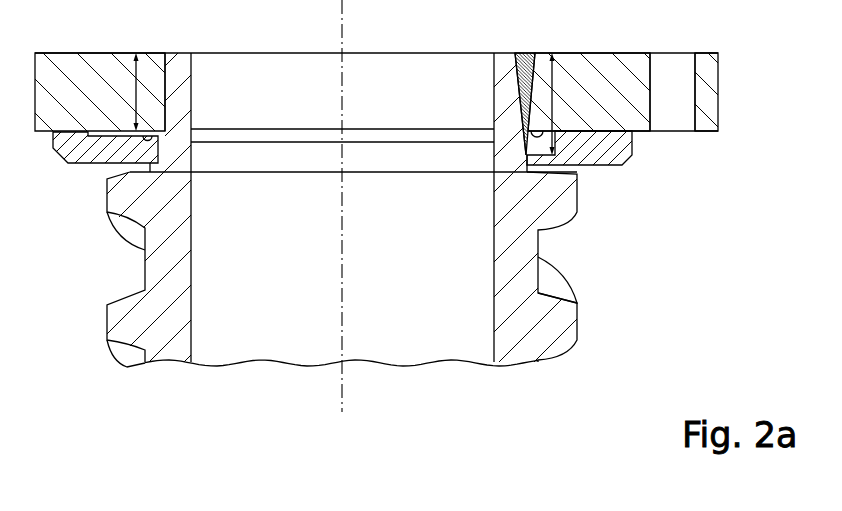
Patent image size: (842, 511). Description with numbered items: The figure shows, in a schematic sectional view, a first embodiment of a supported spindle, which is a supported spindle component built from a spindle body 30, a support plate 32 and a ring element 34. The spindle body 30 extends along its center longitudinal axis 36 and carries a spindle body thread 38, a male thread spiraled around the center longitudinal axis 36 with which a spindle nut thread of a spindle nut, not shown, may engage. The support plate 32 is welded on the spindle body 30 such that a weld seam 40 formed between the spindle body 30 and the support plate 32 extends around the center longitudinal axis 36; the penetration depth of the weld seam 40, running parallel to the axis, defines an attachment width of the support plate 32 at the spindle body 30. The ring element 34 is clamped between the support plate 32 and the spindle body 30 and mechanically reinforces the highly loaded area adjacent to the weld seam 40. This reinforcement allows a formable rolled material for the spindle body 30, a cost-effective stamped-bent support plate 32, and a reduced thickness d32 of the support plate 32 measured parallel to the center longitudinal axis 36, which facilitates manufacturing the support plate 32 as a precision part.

The spindle body 30 is at (532, 327).
The support plate 32 is at (705, 93).
The ring element 34 is at (617, 150).
The center longitudinal axis 36 is at (342, 400).
The spindle body thread 38 is at (595, 296).
The weld seam 40 is at (524, 70).
The thickness of support plate d32 is at (136, 85).